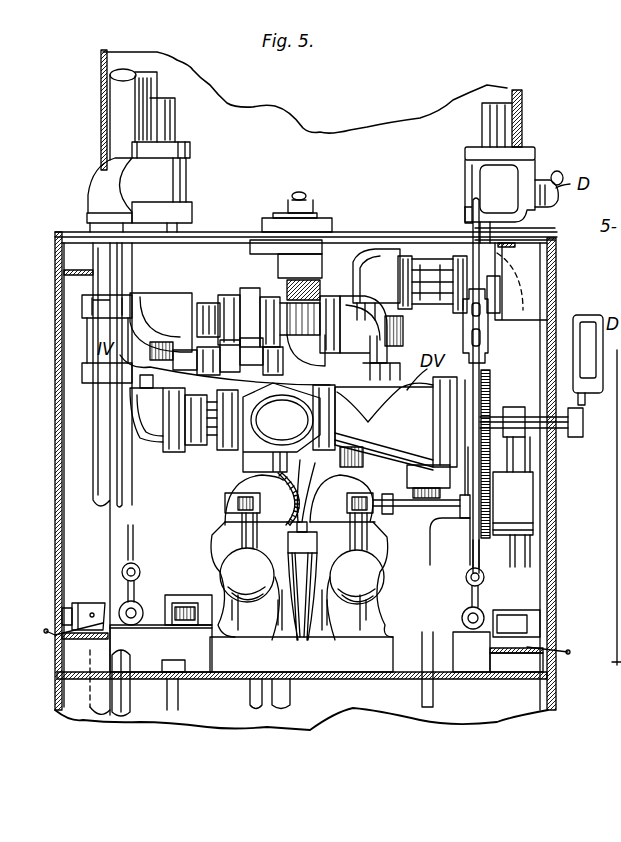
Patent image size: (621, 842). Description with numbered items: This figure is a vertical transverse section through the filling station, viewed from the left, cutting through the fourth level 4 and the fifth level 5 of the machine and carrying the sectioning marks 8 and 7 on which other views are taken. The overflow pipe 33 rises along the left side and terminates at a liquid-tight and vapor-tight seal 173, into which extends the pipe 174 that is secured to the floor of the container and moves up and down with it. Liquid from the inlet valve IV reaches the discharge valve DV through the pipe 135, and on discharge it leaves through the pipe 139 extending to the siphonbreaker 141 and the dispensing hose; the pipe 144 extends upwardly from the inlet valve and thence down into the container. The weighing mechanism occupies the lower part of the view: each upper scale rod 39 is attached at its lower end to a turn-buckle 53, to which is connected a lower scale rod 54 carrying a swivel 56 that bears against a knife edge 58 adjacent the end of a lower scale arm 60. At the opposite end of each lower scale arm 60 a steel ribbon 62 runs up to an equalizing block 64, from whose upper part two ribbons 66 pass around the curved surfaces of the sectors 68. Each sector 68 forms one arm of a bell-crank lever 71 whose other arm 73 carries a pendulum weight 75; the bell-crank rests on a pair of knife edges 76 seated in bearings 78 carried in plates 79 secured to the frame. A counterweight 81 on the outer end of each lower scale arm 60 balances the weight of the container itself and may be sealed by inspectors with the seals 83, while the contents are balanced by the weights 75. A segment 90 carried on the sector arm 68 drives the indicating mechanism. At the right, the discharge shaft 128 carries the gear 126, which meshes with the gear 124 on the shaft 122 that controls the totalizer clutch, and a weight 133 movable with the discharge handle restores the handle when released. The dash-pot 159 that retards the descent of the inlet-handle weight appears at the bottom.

The pipe 144 is at (128, 117).
The pipe 174 is at (290, 199).
The liquid-tight and vapor-tight seal 173 is at (263, 240).
The overflow pipe 33 is at (350, 240).
The scale rod 39 is at (472, 203).
The pipe 139 is at (435, 270).
The siphonbreaker 141 is at (504, 90).
The fifth level 5 is at (523, 129).
The section line 8 is at (32, 255).
The section line 7 is at (30, 472).
The fourth level 4 is at (50, 345).
The turn-buckle 53 is at (464, 338).
The gear 126 is at (490, 388).
The discharge shaft 128 is at (562, 432).
The weight 133 is at (523, 485).
The gear 124 is at (498, 508).
The shaft 122 is at (477, 532).
The pipe 135 is at (281, 427).
The segment 90 is at (253, 468).
The bell-crank lever 71 is at (285, 480).
The steel ribbons 66 is at (325, 478).
The sector 68 is at (228, 497).
The knife edges 76 is at (238, 512).
The bearing 78 is at (243, 532).
The arm 73 is at (245, 543).
The plates 79 is at (215, 580).
The weight 75 is at (302, 576).
The lower scale rod 54 is at (128, 545).
The swivel 56 is at (127, 588).
The knife edge 58 is at (172, 593).
The counterweight 81 is at (88, 612).
The seals 83 is at (46, 635).
The lower scale arm 60 is at (153, 628).
The equalizing block 64 is at (293, 630).
The steel ribbon 62 is at (303, 633).
The dash-pot 159 is at (477, 685).